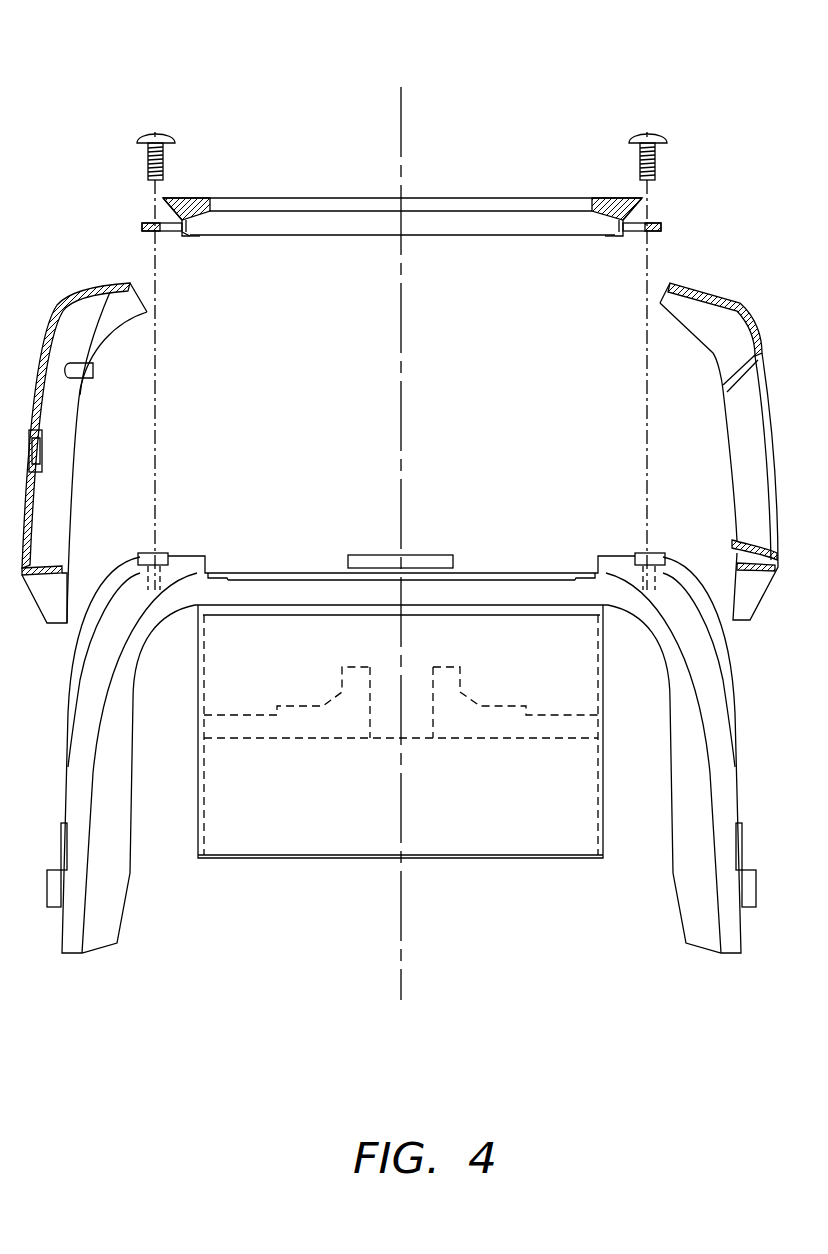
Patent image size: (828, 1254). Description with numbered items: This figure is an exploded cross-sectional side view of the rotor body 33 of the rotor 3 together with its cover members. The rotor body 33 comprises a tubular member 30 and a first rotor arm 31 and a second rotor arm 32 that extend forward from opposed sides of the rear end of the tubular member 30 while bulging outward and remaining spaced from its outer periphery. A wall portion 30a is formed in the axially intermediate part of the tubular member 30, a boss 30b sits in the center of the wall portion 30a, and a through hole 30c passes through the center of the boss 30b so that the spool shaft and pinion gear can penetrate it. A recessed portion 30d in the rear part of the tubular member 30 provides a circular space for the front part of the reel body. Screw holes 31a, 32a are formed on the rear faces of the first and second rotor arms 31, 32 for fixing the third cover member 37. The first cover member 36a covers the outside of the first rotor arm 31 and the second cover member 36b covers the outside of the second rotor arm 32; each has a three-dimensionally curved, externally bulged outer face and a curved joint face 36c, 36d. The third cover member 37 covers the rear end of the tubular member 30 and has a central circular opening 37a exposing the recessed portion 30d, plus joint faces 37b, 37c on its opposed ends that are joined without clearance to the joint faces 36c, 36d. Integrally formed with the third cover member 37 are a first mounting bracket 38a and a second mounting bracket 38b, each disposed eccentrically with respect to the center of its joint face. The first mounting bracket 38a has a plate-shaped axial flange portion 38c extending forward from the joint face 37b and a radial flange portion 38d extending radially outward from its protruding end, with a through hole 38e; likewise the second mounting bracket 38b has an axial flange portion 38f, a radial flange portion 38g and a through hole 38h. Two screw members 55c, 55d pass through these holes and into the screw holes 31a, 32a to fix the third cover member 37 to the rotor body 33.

The rotor 3 is at (401, 544).
The tubular member 30 is at (384, 742).
The wall portion 30a is at (401, 813).
The boss 30b is at (401, 821).
The through hole 30c is at (399, 865).
The recessed portion 30d is at (401, 541).
The first rotor arm 31 is at (137, 780).
The screw hole 31a is at (190, 507).
The second rotor arm 32 is at (681, 772).
The screw hole 32a is at (668, 495).
The rotor body 33 is at (401, 864).
The first cover member 36a is at (111, 457).
The second cover member 36b is at (723, 270).
The joint face 36c is at (121, 453).
The joint face 36d is at (664, 456).
The third cover member 37 is at (402, 140).
The opening 37a is at (209, 146).
The joint face 37b is at (131, 154).
The joint face 37c is at (691, 172).
The first mounting bracket 38a is at (247, 272).
The second mounting bracket 38b is at (547, 274).
The axial flange portion 38c is at (267, 263).
The radial flange portion 38d is at (221, 288).
The through hole 38e is at (112, 212).
The axial flange portion 38f is at (573, 176).
The radial flange portion 38g is at (685, 208).
The through hole 38h is at (616, 269).
The screw member 55c is at (156, 100).
The screw member 55d is at (645, 104).